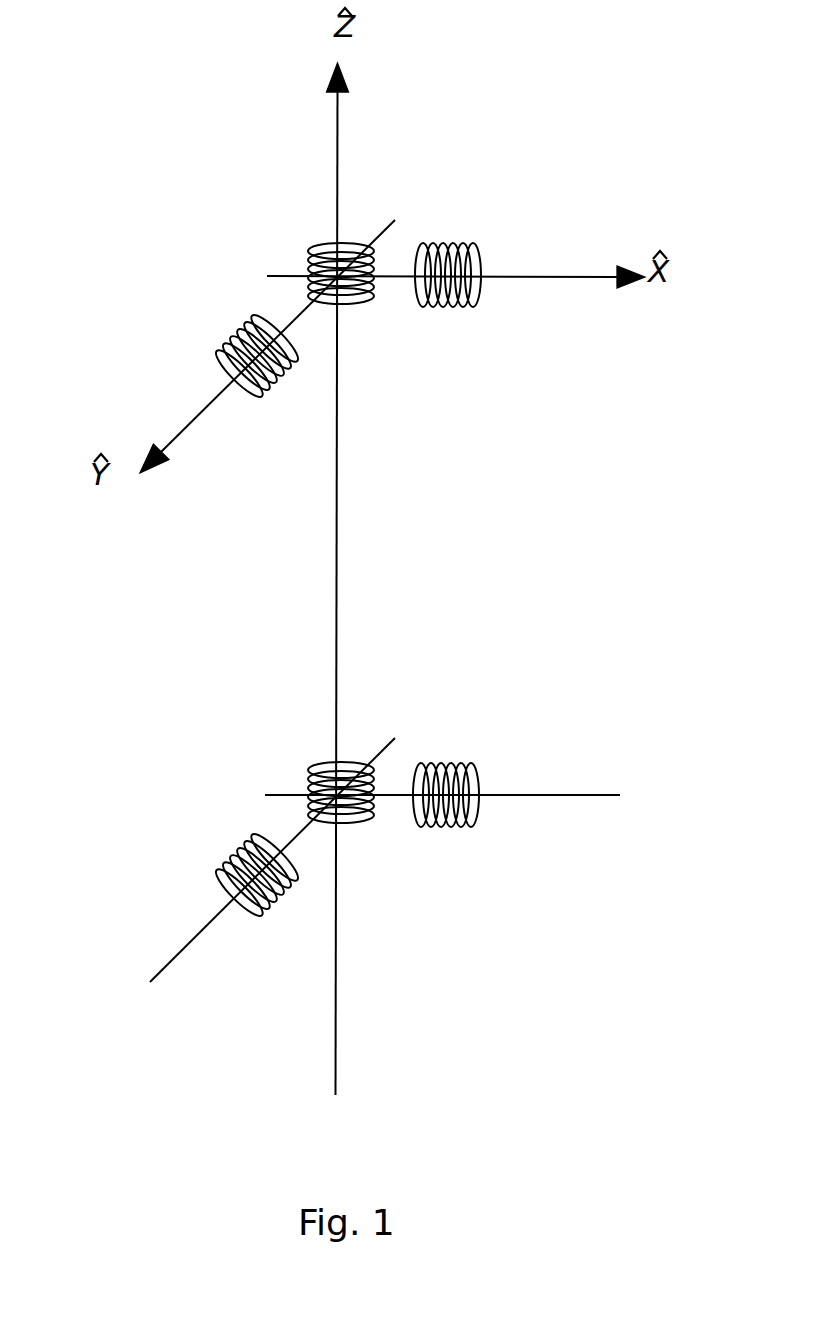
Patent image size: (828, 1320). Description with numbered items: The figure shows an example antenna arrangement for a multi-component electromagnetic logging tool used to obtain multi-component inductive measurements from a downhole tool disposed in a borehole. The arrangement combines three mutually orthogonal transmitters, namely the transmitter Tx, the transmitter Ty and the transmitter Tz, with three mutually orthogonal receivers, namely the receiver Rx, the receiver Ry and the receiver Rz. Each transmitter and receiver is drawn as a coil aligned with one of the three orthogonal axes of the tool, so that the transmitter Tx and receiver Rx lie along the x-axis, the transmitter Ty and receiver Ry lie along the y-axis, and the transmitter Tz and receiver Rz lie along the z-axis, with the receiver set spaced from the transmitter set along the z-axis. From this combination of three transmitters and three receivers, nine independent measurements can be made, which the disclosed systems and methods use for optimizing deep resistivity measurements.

The transmitter Tx is at (448, 233).
The transmitter Ty is at (257, 383).
The transmitter Tz is at (314, 239).
The receiver Rx is at (446, 756).
The receiver Ry is at (257, 903).
The receiver Rz is at (312, 762).